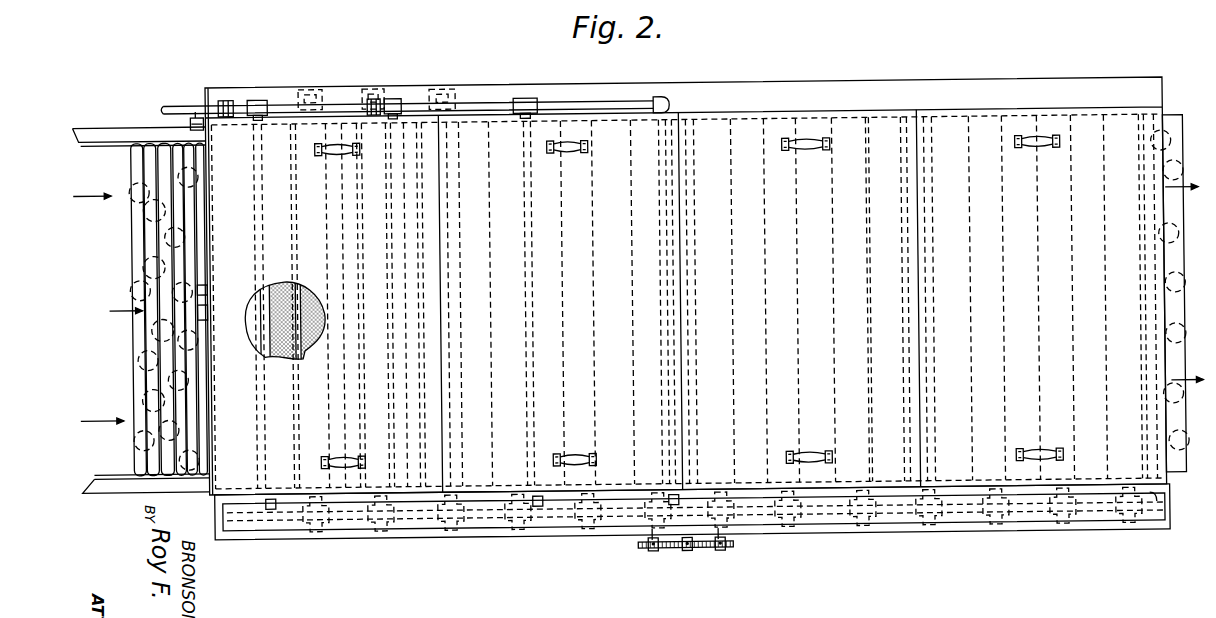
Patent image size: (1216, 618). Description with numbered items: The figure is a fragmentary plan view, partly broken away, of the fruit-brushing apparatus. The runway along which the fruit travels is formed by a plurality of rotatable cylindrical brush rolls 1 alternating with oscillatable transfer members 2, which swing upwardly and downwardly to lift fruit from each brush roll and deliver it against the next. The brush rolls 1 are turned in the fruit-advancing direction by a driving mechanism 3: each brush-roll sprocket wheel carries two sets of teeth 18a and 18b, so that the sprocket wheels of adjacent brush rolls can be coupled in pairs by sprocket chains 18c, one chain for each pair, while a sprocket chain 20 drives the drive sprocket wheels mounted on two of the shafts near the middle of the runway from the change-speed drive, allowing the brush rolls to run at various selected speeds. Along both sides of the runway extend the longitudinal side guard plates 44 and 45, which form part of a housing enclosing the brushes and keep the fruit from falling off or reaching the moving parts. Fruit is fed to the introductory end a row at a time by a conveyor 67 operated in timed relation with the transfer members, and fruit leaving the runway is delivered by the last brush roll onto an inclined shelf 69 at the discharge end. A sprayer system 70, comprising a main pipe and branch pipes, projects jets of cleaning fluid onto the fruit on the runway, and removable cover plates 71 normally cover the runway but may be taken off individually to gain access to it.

The brush roll 1 is at (302, 351).
The transfer member 2 is at (278, 356).
The driving mechanism 3 is at (667, 558).
The set of sprocket teeth 18a is at (681, 559).
The set of sprocket teeth 18b is at (684, 511).
The sprocket chain 18c is at (339, 528).
The sprocket chain 20 is at (634, 553).
The side guard plate 44 is at (475, 499).
The side guard plate 45 is at (758, 120).
The conveyor 67 is at (127, 282).
The inclined shelf 69 is at (1165, 129).
The sprayer system 70 is at (466, 103).
The removable cover plate 71 is at (500, 125).